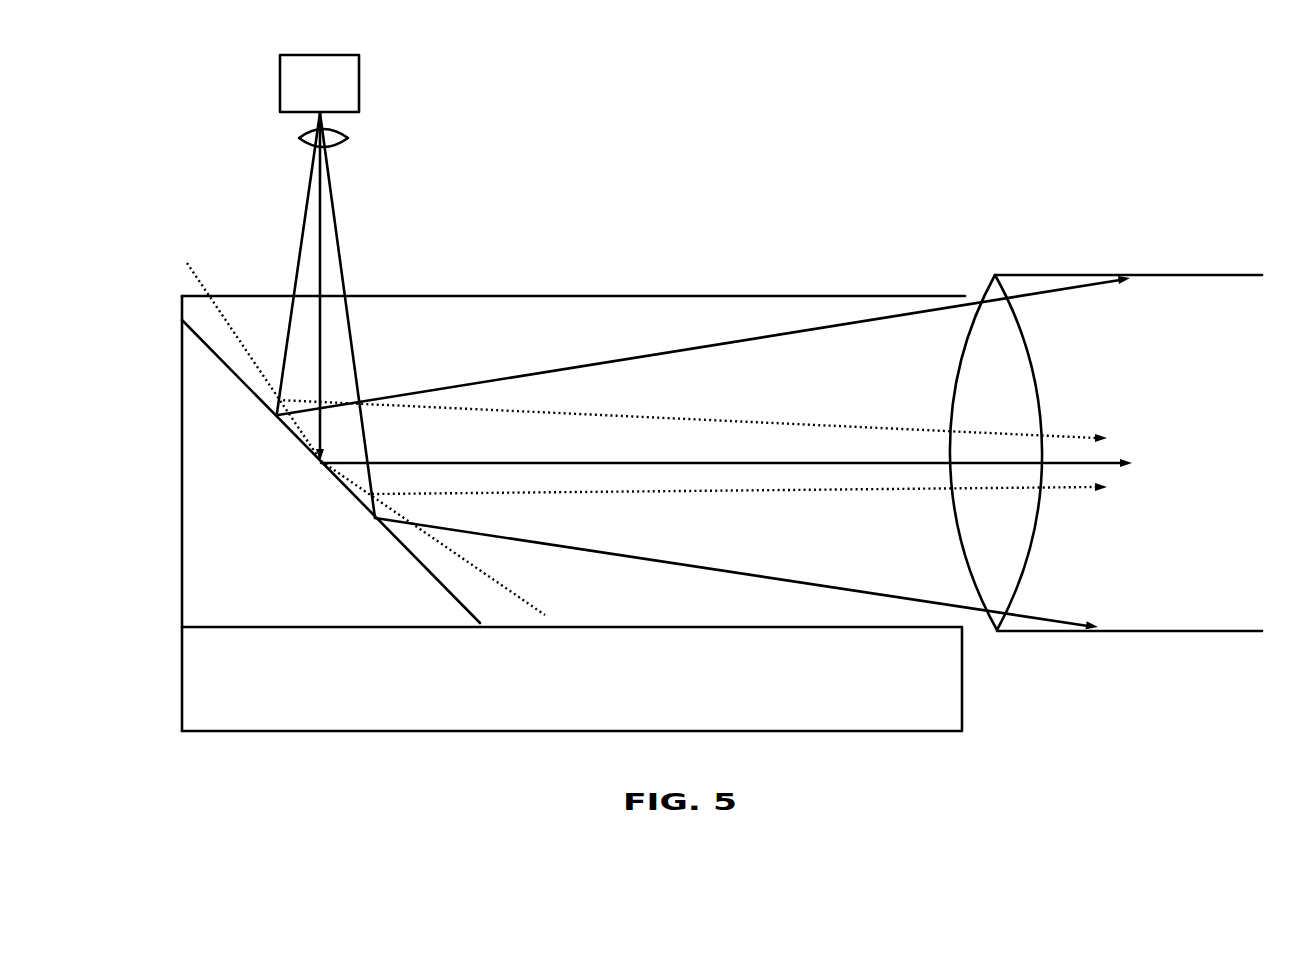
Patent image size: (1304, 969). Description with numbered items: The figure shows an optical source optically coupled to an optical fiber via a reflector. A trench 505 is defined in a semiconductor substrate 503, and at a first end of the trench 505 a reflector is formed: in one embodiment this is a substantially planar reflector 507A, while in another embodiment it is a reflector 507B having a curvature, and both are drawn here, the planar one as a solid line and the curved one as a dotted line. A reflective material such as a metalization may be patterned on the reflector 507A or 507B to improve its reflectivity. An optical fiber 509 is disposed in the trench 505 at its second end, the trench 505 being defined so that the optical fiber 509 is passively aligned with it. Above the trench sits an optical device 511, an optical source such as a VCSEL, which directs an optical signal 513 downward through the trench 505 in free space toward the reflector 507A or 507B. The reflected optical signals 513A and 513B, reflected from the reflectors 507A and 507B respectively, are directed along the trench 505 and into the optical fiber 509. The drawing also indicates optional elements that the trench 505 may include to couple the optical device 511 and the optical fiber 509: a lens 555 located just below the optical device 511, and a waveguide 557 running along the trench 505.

The semiconductor substrate 503 is at (953, 688).
The trench 505 is at (623, 200).
The reflector 507A is at (392, 536).
The reflector 507B is at (212, 275).
The optical fiber 509 is at (1187, 265).
The optical device 511 is at (360, 70).
The optical signal 513 is at (327, 283).
The optical signal 513A is at (473, 385).
The optical signal 513B is at (638, 418).
The lens 555 is at (349, 138).
The waveguide 557 is at (817, 297).